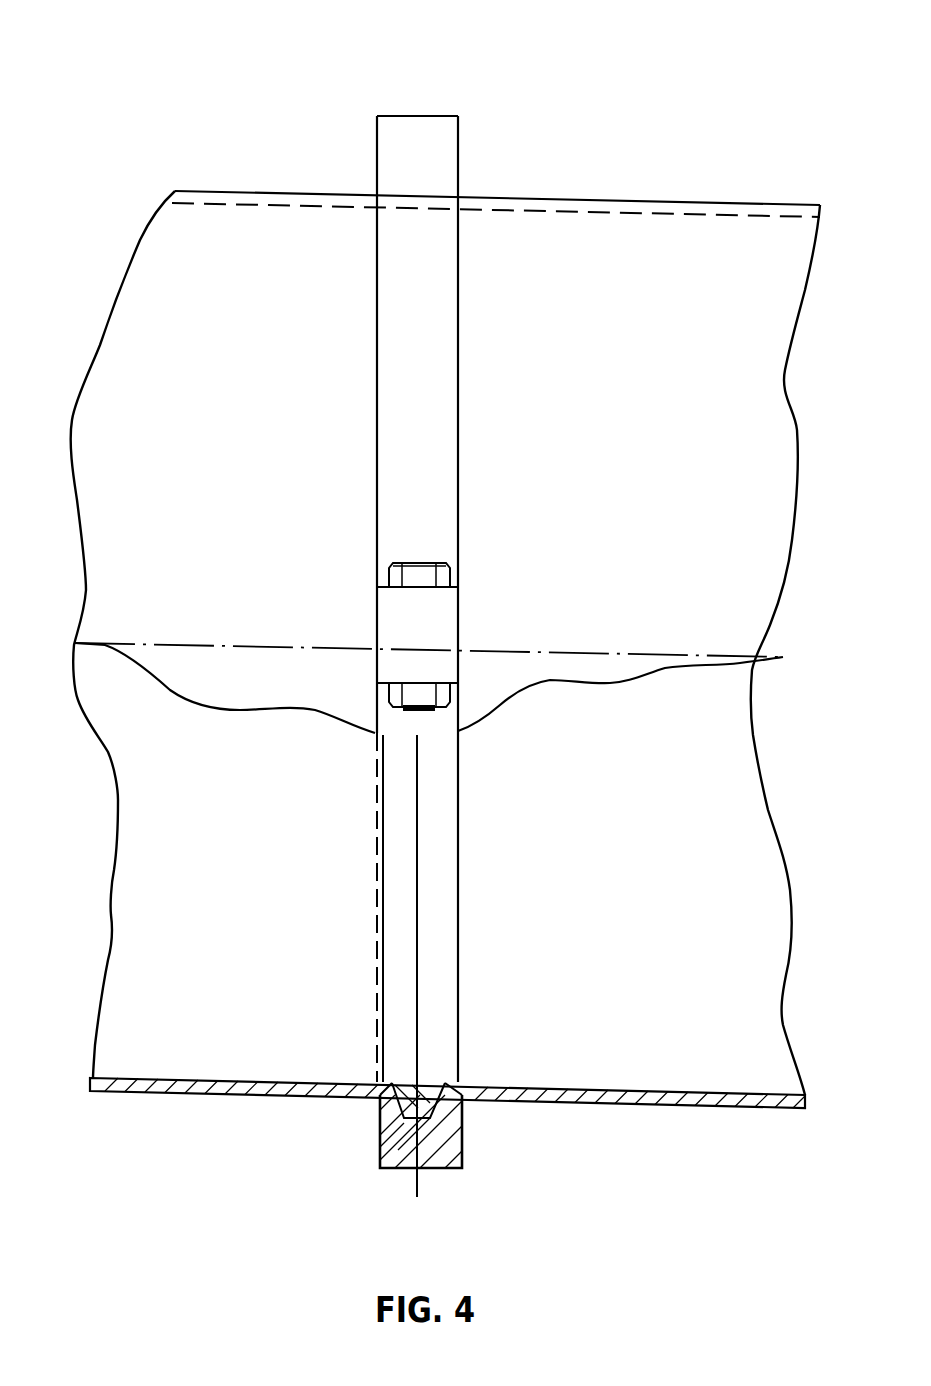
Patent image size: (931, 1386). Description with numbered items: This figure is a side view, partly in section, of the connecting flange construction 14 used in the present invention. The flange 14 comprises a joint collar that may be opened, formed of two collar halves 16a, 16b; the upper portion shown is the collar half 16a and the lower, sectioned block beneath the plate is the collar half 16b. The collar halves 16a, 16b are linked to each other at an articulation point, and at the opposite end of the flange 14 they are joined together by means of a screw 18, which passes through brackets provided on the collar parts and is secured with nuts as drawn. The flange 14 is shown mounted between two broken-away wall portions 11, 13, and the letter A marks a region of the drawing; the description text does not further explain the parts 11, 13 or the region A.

The housing wall 11 is at (145, 1005).
The second housing wall 13 is at (757, 1023).
The connecting flange construction 14 is at (418, 108).
The collar half 16a is at (440, 396).
The collar half 16b is at (378, 1170).
The screw 18 is at (448, 579).
The region A is at (508, 892).